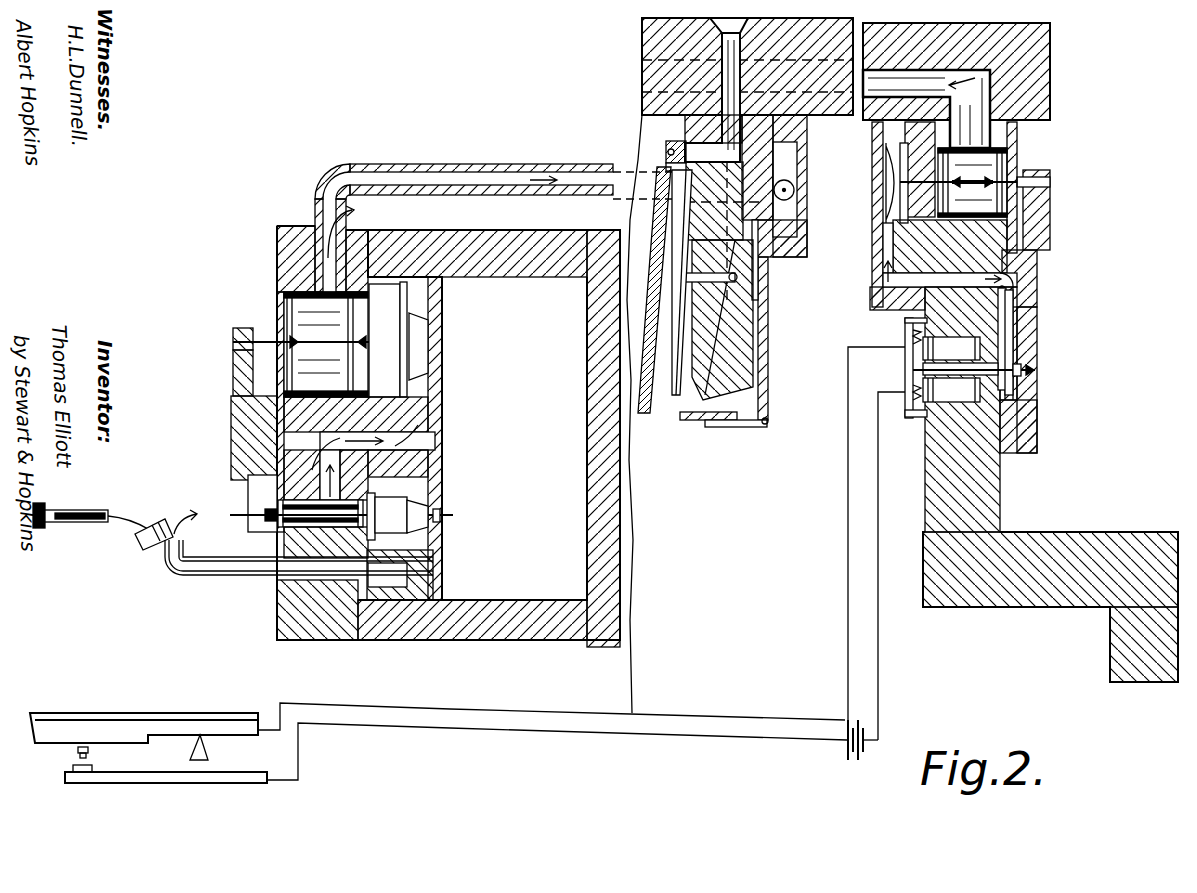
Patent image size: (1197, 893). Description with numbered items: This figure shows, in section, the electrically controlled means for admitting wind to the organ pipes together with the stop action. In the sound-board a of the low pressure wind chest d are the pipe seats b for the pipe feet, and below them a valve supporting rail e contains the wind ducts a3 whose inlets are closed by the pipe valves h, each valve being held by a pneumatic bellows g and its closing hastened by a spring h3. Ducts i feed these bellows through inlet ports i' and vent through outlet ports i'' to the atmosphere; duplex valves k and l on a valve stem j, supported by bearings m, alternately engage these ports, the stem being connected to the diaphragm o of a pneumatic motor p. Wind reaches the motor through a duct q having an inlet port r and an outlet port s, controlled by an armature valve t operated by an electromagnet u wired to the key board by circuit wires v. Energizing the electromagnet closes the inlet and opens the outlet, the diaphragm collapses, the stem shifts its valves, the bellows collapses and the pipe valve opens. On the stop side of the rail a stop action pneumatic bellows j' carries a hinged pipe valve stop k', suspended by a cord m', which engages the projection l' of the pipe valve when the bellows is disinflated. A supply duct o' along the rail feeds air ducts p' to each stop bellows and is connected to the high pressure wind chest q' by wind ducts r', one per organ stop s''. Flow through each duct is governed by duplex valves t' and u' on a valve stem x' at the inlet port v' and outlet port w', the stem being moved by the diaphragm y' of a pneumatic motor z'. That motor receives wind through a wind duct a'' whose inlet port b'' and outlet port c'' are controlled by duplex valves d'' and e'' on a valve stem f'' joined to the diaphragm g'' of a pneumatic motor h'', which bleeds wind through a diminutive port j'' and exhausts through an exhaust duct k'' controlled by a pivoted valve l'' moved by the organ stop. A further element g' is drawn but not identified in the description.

The sound-board a is at (976, 71).
The pipe seats b is at (664, 87).
The wind ducts a3 is at (725, 112).
The valve supporting rail e is at (673, 168).
The pipe valve h is at (639, 170).
The spring h3 is at (680, 205).
The ducts i is at (972, 109).
The inlet ports i' is at (872, 183).
The outlet ports i'' is at (1007, 178).
The diaphragm o is at (888, 172).
The supply duct o' is at (790, 186).
The pneumatic motor p is at (859, 214).
The air ducts p' is at (777, 267).
The ducts q is at (927, 325).
The high pressure wind chest q' is at (448, 436).
The bearings m is at (1003, 187).
The duplex valve l is at (1047, 210).
The valve stem j is at (1044, 187).
The duplex valve k is at (1045, 350).
The pneumatic bellows g is at (679, 316).
The pipe g' is at (1049, 341).
The armature valve t is at (997, 346).
The outlet port s is at (1043, 372).
The inlet port r is at (953, 368).
The electromagnet u is at (938, 416).
The circuit wires v is at (851, 533).
The low pressure wind chest d is at (694, 414).
The projection l' is at (654, 315).
The cord m' is at (708, 433).
The pipe valve stop k' is at (736, 443).
The stop action pneumatic bellows j' is at (775, 440).
The wind ducts r' is at (464, 228).
The valve stem x' is at (304, 320).
The outlet port w' is at (253, 320).
The diaphragm y' is at (367, 346).
The inlet port v' is at (425, 340).
The pneumatic motor z' is at (458, 346).
The duplex valve u' is at (245, 415).
The duplex valve t' is at (412, 339).
The wind duct a'' is at (391, 448).
The outlet port c'' is at (305, 529).
The duplex valve d'' is at (426, 503).
The duplex valve e'' is at (324, 503).
The valve stem f'' is at (243, 530).
The diaphragm g'' is at (436, 512).
The diminutive port j'' is at (473, 521).
The pneumatic motor h'' is at (457, 532).
The inlet port b'' is at (425, 575).
The organ stop s'' is at (91, 501).
The pivoted valve l'' is at (154, 552).
The exhaust duct k'' is at (299, 590).